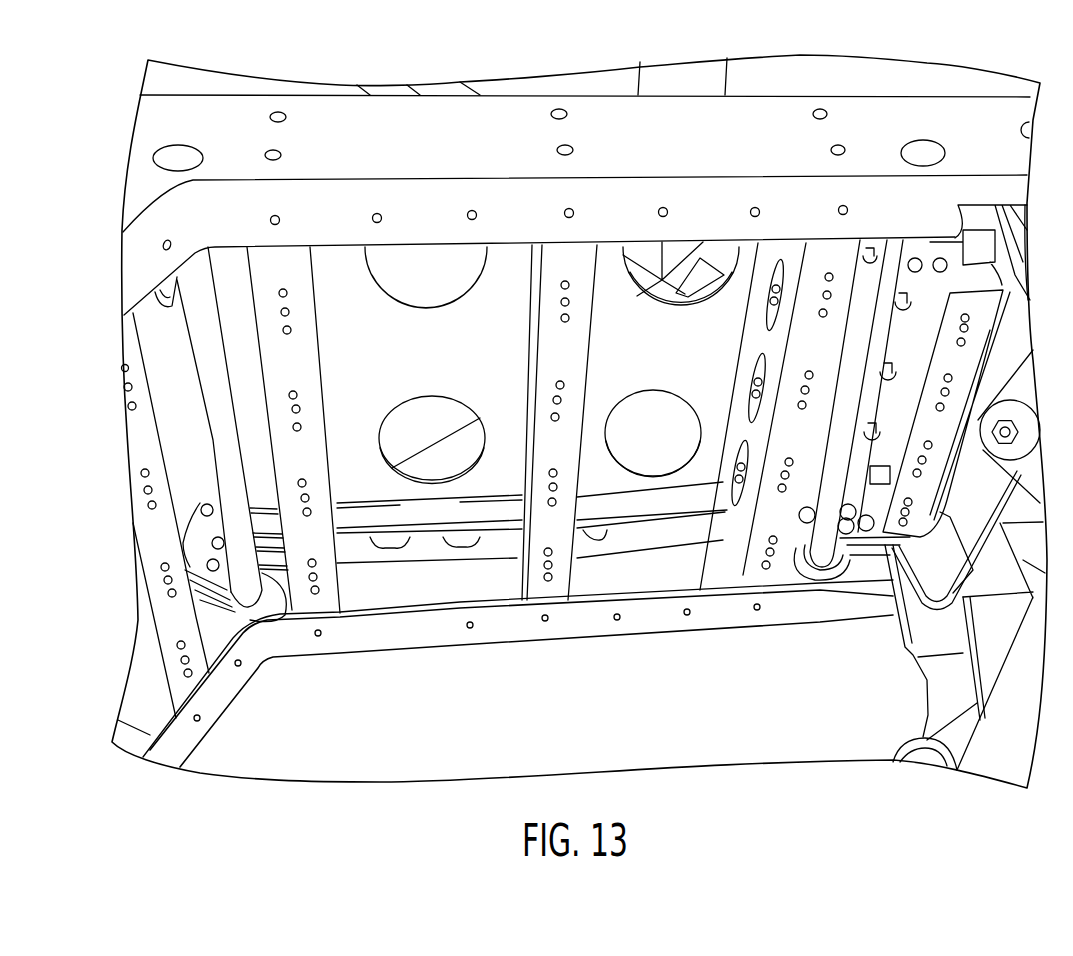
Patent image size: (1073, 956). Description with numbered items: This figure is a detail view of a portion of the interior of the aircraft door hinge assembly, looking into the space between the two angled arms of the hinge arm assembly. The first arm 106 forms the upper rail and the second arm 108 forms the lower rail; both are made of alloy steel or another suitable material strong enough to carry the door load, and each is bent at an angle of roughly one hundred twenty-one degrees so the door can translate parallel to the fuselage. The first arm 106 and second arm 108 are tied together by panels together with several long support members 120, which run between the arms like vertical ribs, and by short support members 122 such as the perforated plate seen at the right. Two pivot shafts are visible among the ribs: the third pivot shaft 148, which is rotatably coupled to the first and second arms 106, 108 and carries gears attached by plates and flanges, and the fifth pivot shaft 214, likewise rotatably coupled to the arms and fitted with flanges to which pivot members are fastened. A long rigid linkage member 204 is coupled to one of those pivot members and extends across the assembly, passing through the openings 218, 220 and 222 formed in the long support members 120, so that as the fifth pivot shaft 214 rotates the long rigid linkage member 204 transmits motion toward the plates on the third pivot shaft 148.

The first arm 106 is at (673, 113).
The second arm 108 is at (587, 623).
The long support members 120 is at (145, 447).
The short support members 122 is at (970, 358).
The third pivot shaft 148 is at (813, 580).
The long rigid linkage member 204 is at (613, 520).
The fifth pivot shaft 214 is at (212, 375).
The opening 218 is at (337, 503).
The opening 220 is at (522, 507).
The opening 222 is at (720, 482).